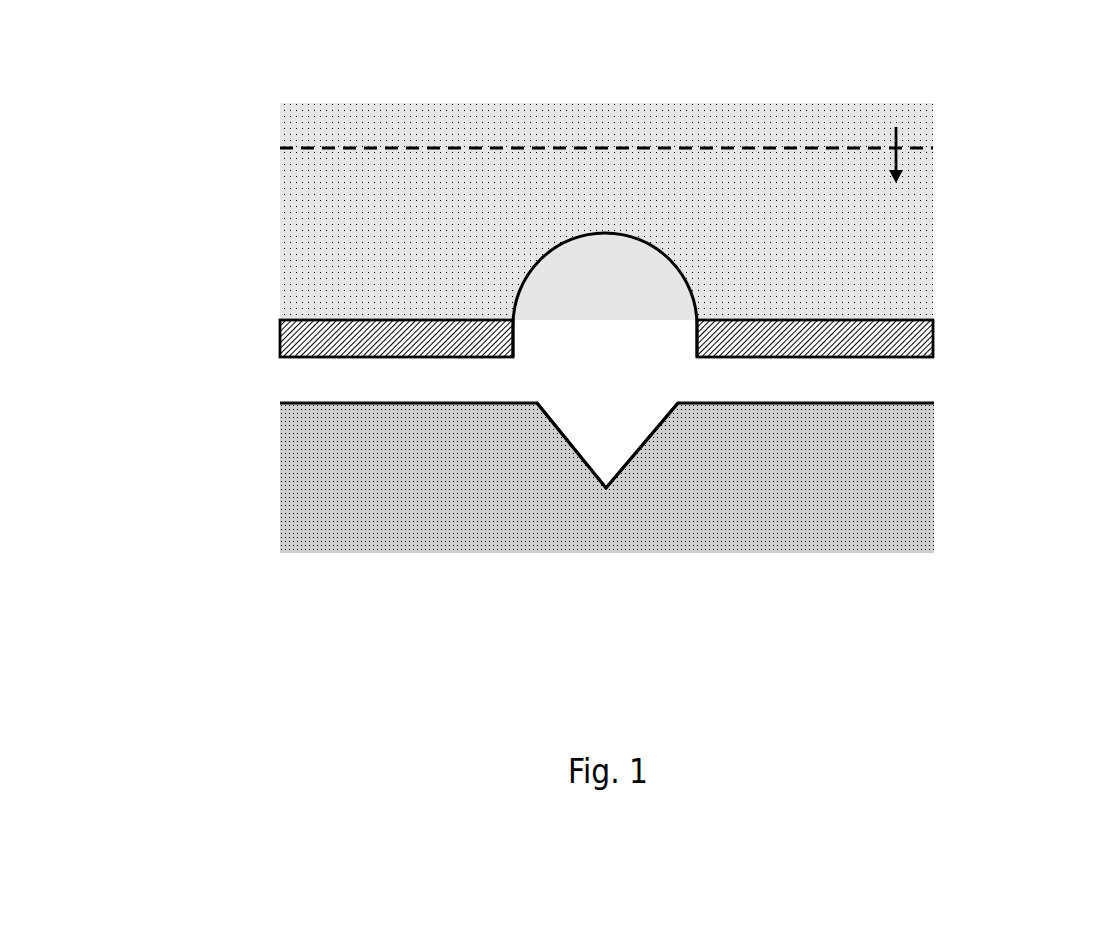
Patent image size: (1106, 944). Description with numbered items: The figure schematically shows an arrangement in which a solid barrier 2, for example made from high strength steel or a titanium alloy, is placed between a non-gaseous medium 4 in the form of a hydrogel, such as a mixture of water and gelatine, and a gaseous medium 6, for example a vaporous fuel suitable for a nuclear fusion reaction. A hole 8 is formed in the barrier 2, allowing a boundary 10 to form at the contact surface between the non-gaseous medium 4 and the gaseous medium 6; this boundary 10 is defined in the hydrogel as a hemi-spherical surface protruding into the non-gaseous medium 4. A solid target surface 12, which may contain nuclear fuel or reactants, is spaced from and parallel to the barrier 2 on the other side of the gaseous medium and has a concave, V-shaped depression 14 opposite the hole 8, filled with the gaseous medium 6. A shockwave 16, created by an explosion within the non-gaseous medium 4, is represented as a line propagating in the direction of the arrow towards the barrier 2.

The solid barrier 2 is at (322, 338).
The non-gaseous medium 4 is at (385, 218).
The gaseous medium 6 is at (482, 378).
The hole 8 is at (594, 336).
The boundary 10 is at (689, 274).
The solid target surface 12 is at (835, 447).
The V-shaped depression 14 is at (625, 467).
The shockwave 16 is at (745, 146).